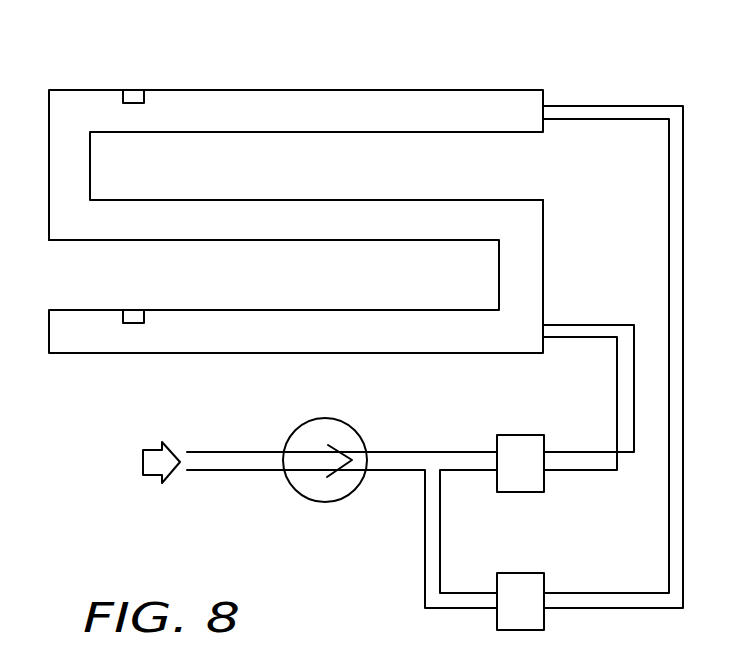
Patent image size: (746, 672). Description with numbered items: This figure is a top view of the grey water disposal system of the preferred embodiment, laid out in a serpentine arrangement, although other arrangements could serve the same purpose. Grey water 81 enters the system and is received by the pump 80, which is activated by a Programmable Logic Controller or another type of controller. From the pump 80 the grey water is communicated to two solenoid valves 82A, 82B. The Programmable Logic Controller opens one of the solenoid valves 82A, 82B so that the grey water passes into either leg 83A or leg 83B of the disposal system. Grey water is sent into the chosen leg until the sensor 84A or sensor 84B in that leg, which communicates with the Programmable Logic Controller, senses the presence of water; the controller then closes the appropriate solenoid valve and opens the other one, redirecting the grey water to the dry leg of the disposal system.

The pump 80 is at (307, 422).
The grey water 81 is at (142, 462).
The solenoid valve 82A is at (509, 434).
The solenoid valve 82B is at (518, 571).
The leg of the disposal system 83A is at (408, 90).
The leg of the disposal system 83B is at (313, 310).
The sensor 84A is at (132, 90).
The sensor 84B is at (133, 310).